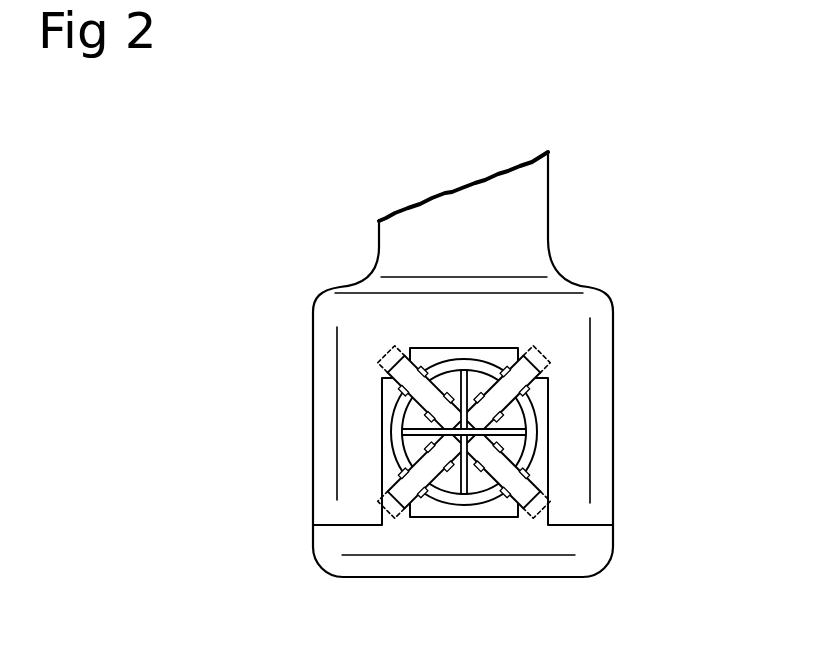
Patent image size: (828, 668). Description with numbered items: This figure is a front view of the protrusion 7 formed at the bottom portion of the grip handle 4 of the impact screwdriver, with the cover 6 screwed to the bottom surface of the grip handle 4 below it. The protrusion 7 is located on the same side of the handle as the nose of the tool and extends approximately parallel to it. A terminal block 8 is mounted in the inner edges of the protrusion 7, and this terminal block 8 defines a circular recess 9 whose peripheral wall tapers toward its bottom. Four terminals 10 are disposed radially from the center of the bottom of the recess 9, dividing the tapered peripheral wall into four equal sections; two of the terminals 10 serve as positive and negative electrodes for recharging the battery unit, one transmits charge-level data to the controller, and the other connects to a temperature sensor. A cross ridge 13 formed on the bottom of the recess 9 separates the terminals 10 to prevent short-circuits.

The grip handle 4 is at (540, 212).
The cover 6 is at (605, 542).
The protrusion 7 is at (583, 400).
The terminal block 8 is at (545, 395).
The circular recess 9 is at (452, 487).
The terminals 10 is at (395, 370).
The cross ridge 13 is at (513, 433).